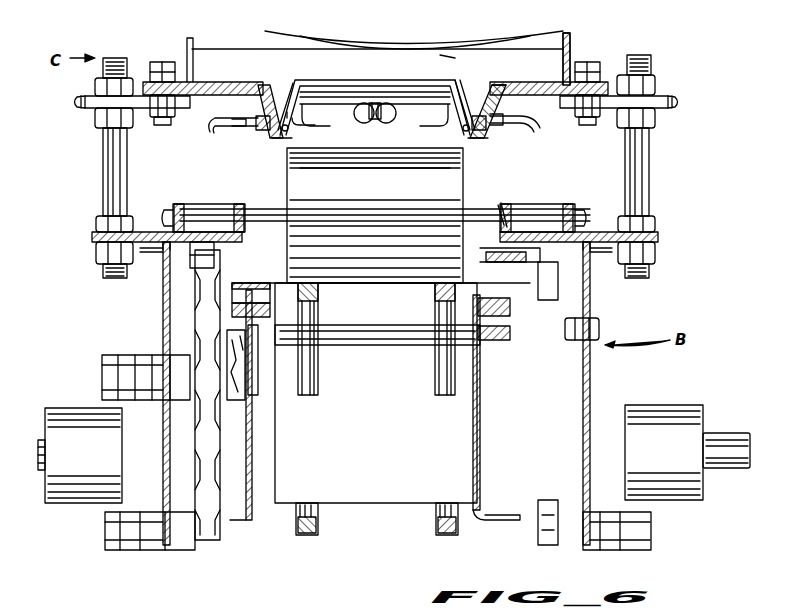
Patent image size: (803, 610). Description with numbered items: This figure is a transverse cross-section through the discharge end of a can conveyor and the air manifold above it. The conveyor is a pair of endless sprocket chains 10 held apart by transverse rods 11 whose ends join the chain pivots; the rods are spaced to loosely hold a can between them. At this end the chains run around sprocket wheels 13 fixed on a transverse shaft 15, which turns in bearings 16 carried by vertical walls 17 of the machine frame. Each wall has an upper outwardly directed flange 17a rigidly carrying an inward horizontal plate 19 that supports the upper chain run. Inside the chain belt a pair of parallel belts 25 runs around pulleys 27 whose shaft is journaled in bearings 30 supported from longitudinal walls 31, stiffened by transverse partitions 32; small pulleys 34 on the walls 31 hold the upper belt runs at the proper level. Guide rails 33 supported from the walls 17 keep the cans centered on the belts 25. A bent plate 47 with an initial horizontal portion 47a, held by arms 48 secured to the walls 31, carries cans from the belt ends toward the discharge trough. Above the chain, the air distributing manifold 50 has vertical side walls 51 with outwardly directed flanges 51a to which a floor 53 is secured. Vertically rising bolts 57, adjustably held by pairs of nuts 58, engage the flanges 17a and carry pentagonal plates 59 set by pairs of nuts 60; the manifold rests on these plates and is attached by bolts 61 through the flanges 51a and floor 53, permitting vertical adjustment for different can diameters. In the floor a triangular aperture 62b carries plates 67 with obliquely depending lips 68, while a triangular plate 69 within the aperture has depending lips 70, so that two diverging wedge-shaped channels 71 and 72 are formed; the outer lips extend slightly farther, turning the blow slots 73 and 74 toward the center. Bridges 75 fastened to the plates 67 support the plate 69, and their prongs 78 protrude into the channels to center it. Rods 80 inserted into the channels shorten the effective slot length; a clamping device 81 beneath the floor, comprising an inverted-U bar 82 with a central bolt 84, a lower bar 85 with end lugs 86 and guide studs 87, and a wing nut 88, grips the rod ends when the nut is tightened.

The endless sprocket chains 10 is at (180, 204).
The transverse rods 11 is at (410, 200).
The sprocket wheels 13 is at (200, 303).
The transverse shaft 15 is at (40, 445).
The bearings 16 is at (90, 503).
The vertical walls 17 is at (163, 327).
The upper outwardly directed flange 17a is at (96, 248).
The horizontal plate 19 is at (92, 237).
The parallel belts 25 is at (318, 310).
The pulleys 27 is at (436, 522).
The bearings 30 is at (258, 408).
The longitudinally extending parallel walls 31 is at (481, 420).
The transverse partitions 32 is at (385, 393).
The guide rails 33 is at (266, 212).
The small pulleys 34 is at (440, 380).
The bent plate 47 is at (508, 290).
The initial horizontal portion 47a is at (236, 290).
The arms 48 is at (440, 303).
The air distributing manifold 50 is at (571, 58).
The vertical side walls 51 is at (186, 50).
The outwardly directed flanges 51a is at (128, 65).
The floor 53 is at (200, 82).
The bolts 57 is at (103, 165).
The nuts 58 is at (96, 222).
The pentagonal plates 59 is at (85, 101).
The nuts 60 is at (95, 118).
The bolts 61 is at (178, 122).
The triangular aperture 62b is at (482, 95).
The plates 67 is at (235, 83).
The obliquely depending lips 68 is at (266, 136).
The triangular plate 69 is at (372, 80).
The depending lips 70 is at (290, 132).
The channel 71 is at (290, 95).
The channel 72 is at (497, 80).
The blow slot 73 is at (284, 140).
The blow slot 74 is at (466, 135).
The braces or bridges 75 is at (455, 58).
The prongs 78 is at (262, 103).
The rods 80 is at (215, 121).
The clamping device 81 is at (364, 122).
The transverse bar 82 is at (330, 95).
The bolt 84 is at (378, 122).
The transverse bar 85 is at (395, 104).
The end lugs 86 is at (299, 127).
The guide studs 87 is at (248, 128).
The wing nut 88 is at (368, 148).